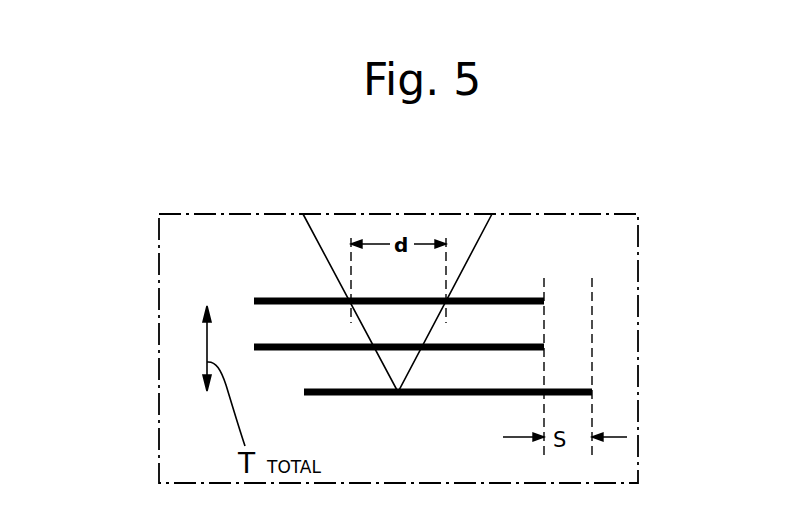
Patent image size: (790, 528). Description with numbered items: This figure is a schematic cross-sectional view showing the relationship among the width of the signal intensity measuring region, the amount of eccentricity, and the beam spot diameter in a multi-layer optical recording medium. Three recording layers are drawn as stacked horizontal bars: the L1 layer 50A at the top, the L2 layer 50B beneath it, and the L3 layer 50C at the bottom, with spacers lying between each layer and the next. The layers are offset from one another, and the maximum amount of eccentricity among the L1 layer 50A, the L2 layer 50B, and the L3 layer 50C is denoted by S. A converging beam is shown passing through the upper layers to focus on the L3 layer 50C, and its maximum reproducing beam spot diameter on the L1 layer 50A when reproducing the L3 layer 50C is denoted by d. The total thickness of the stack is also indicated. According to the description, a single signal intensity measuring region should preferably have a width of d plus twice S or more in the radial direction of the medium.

The L1 layer 50A is at (267, 298).
The L2 layer 50B is at (497, 347).
The L3 layer 50C is at (445, 397).